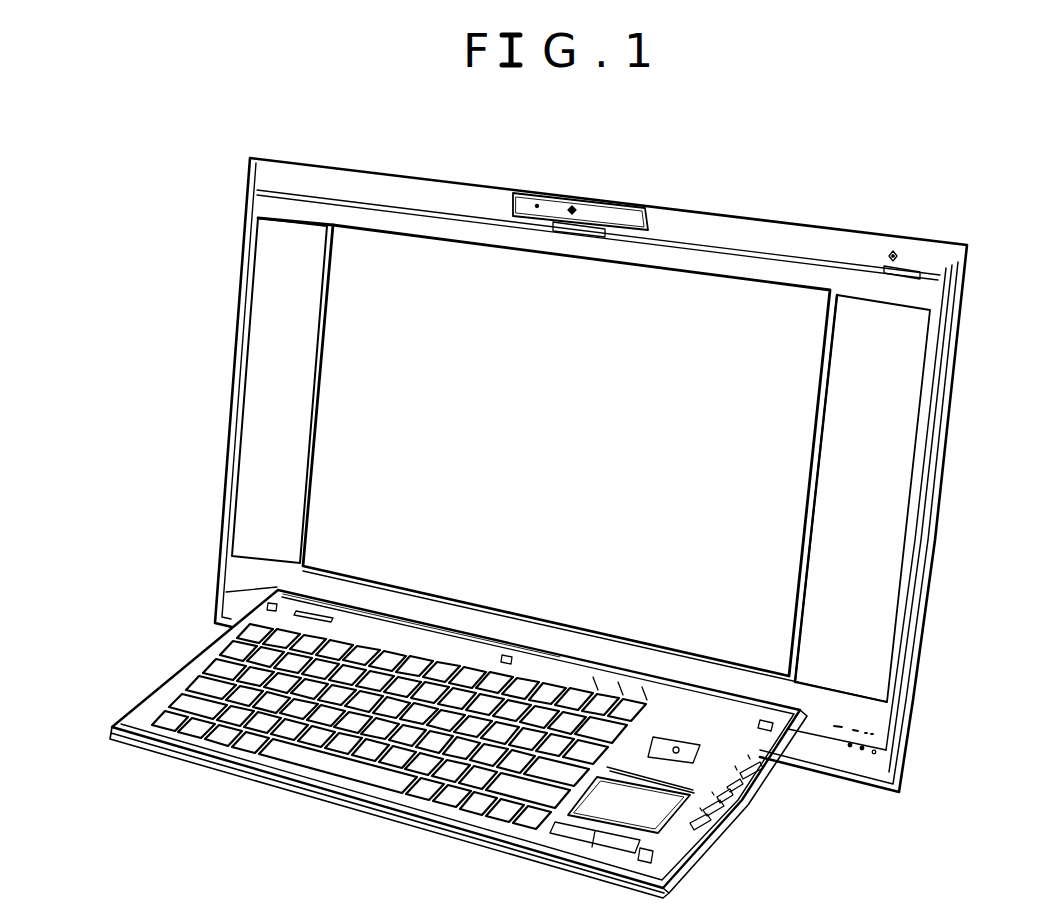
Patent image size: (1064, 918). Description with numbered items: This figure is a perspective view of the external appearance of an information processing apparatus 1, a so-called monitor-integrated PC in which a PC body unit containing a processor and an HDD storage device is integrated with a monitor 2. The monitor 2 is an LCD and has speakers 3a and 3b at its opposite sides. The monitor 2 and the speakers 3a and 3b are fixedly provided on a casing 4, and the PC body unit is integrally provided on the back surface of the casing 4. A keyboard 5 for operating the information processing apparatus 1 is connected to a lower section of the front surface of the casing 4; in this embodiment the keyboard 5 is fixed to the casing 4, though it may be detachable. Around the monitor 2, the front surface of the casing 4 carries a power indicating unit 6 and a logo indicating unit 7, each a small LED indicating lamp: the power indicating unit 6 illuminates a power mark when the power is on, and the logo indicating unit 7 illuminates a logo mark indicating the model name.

The information processing apparatus 1 is at (124, 237).
The monitor 2 is at (353, 405).
The speaker 3a is at (262, 473).
The speaker 3b is at (872, 472).
The casing 4 is at (797, 221).
The keyboard 5 is at (183, 662).
The power indicating unit 6 is at (906, 254).
The logo indicating unit 7 is at (570, 643).